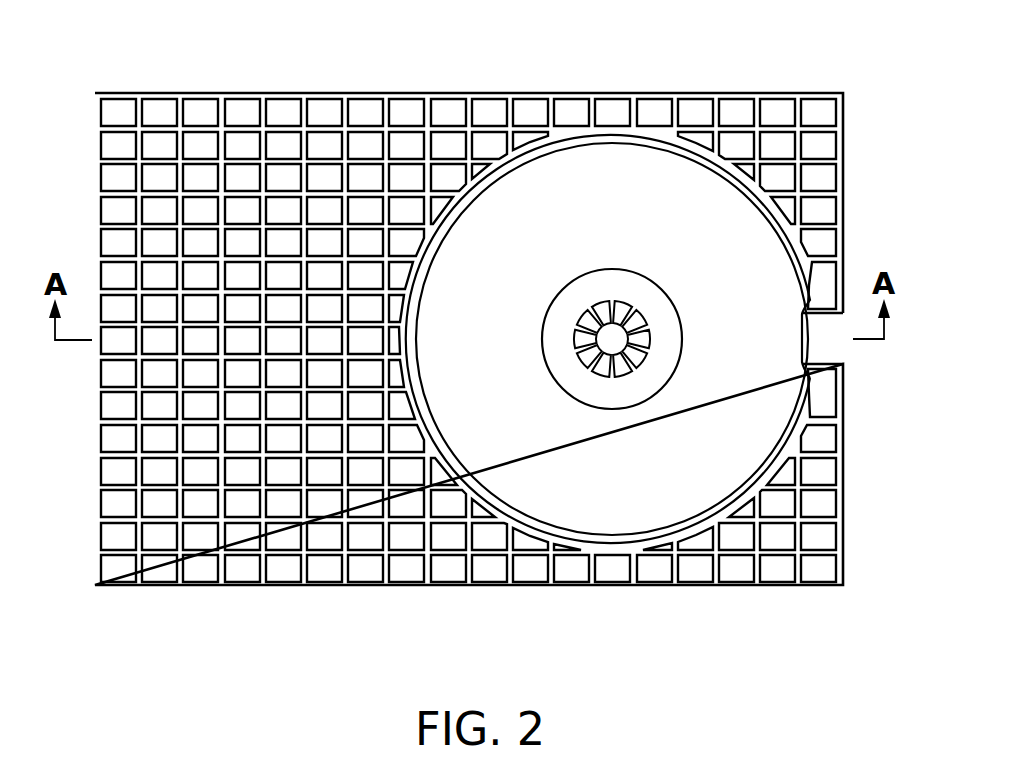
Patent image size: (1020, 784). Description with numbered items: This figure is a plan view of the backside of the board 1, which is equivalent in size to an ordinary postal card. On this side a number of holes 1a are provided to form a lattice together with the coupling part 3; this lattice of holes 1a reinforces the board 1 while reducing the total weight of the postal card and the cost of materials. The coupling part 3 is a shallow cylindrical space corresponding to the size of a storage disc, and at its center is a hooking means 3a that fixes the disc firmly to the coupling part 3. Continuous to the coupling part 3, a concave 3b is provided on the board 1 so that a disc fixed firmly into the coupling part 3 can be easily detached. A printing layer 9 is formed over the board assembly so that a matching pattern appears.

The board 1 is at (466, 93).
The holes 1a is at (292, 575).
The coupling part 3 is at (619, 562).
The hooking means 3a is at (625, 302).
The concave 3b is at (545, 502).
The printing layer 9 is at (832, 362).